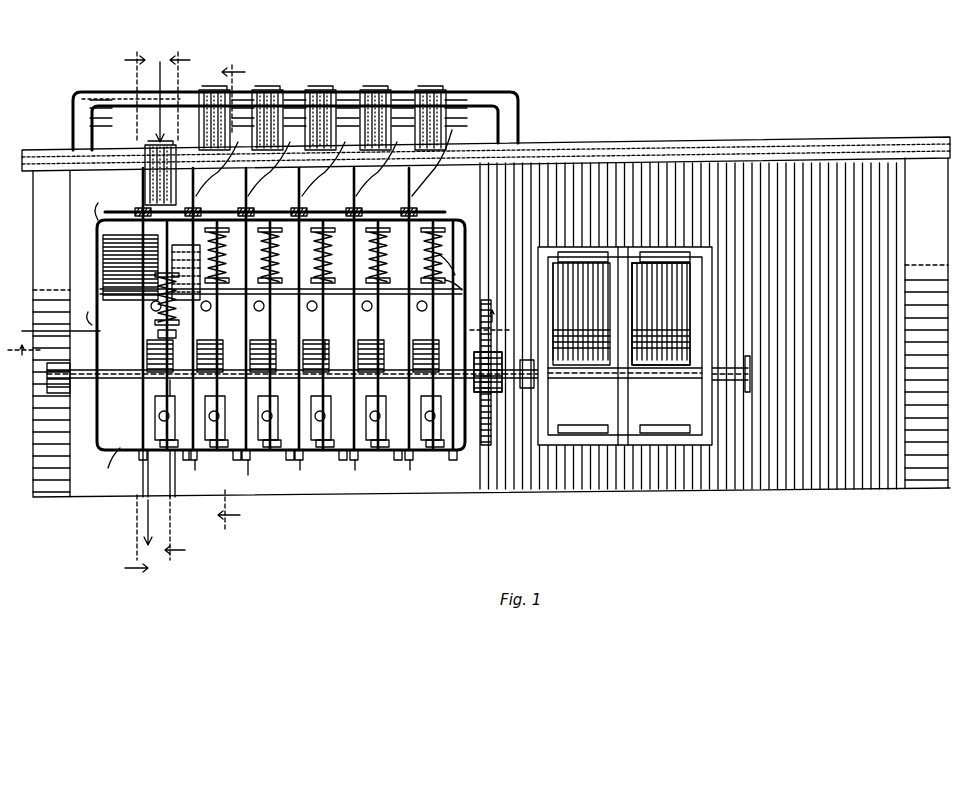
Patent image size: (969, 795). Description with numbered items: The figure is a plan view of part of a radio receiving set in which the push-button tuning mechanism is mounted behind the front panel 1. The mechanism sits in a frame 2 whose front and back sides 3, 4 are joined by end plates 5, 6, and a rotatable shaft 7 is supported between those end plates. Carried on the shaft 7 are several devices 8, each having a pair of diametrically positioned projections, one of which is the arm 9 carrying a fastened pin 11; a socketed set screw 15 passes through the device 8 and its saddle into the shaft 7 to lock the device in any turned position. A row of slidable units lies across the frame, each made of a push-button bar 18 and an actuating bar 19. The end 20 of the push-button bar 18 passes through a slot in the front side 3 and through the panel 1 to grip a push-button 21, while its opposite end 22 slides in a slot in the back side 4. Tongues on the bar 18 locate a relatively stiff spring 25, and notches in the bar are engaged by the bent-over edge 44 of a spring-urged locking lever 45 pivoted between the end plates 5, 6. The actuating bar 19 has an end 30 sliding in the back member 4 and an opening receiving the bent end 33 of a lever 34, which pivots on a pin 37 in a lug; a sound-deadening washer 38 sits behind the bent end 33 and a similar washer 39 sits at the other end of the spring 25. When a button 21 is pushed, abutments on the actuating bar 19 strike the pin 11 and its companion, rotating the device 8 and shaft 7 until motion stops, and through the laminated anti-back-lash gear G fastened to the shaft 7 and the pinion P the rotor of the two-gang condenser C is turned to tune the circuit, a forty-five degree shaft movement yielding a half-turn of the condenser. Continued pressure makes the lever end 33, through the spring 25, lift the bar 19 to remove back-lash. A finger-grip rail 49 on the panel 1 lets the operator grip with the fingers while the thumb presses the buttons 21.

The front panel 1 is at (614, 136).
The frame 2 is at (88, 248).
The front side of frame 3 is at (121, 314).
The back side of frame 4 is at (145, 310).
The end plate 5 is at (160, 296).
The end plate 6 is at (462, 300).
The rotatable shaft 7 is at (47, 380).
The device 8 is at (440, 460).
The projection 9 is at (320, 400).
The pin 11 is at (350, 342).
The set screw 15 is at (404, 460).
The push-button bar 18 is at (396, 215).
The actuating bar 19 is at (331, 156).
The end of push-button bar 20 is at (145, 186).
The push-button 21 is at (162, 143).
The end of push-button bar 22 is at (458, 460).
The spring 25 is at (448, 250).
The end of actuating bar 30 is at (452, 465).
The bent end of lever 33 is at (448, 294).
The lever 34 is at (240, 322).
The pin 37 is at (368, 355).
The washer 38 is at (176, 334).
The washer 39 is at (275, 222).
The bent-over edge 44 is at (462, 290).
The locking lever 45 is at (455, 275).
The rail 49 is at (515, 125).
The pinion P is at (505, 386).
The laminated gear G is at (486, 410).
The condenser C is at (672, 365).